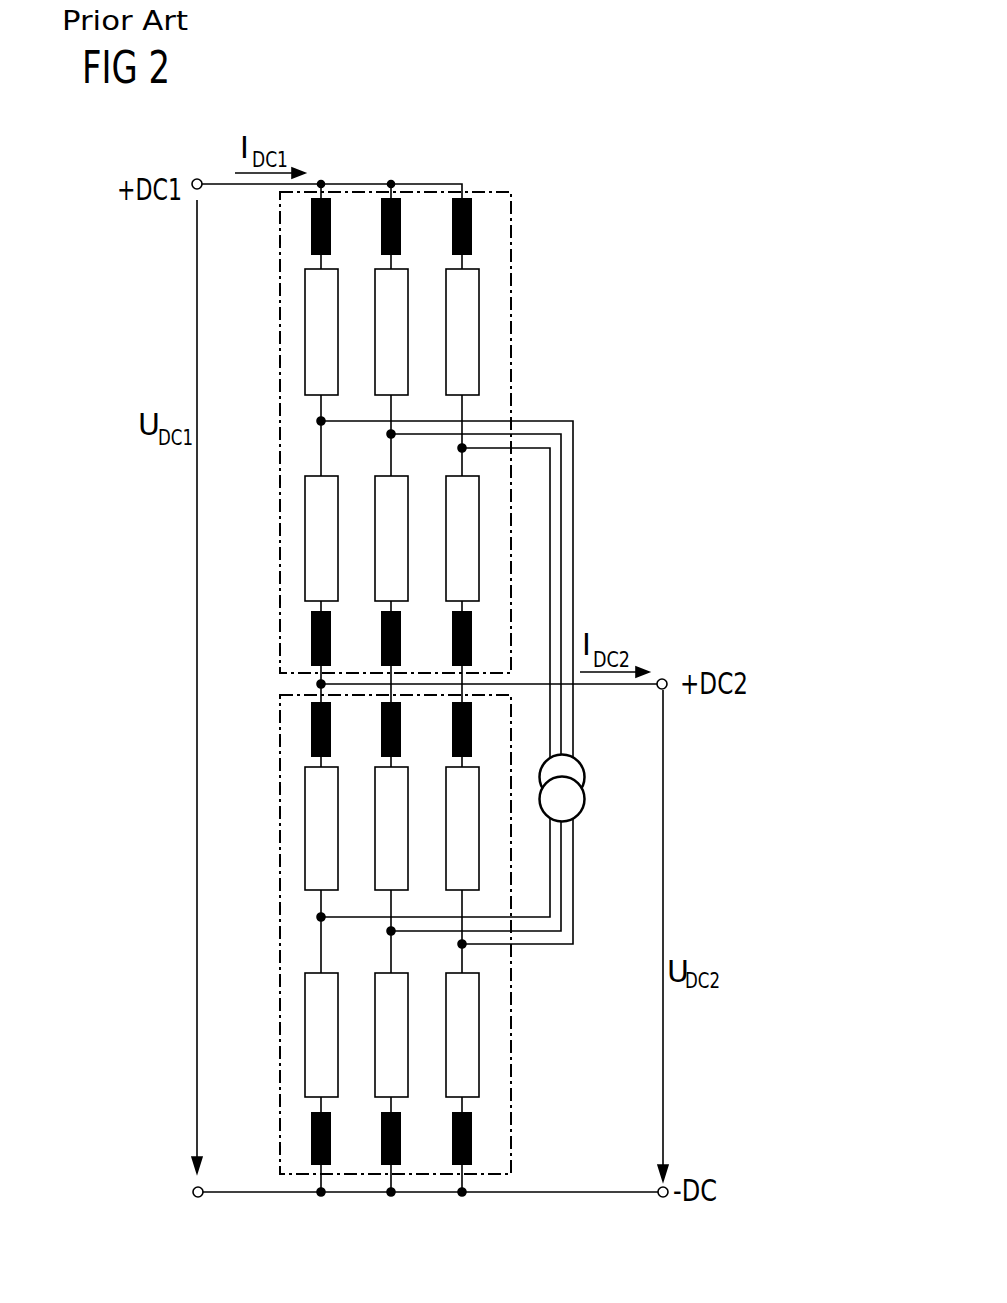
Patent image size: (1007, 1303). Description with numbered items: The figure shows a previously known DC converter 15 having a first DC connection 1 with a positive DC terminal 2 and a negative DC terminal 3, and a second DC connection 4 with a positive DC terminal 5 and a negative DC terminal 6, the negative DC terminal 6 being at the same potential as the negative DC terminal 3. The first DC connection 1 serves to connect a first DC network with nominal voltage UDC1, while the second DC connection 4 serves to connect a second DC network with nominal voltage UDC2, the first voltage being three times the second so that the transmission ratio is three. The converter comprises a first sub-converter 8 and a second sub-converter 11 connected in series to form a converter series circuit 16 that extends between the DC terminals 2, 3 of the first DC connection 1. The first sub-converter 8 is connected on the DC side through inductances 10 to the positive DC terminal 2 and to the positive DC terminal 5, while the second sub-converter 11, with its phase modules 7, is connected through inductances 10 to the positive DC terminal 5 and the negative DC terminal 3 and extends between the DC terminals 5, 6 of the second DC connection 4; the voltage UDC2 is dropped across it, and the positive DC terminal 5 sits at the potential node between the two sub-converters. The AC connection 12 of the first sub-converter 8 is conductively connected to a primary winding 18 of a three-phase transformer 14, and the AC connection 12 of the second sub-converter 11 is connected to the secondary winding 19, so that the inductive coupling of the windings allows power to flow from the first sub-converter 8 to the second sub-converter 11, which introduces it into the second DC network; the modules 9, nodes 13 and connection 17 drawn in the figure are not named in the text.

The first DC connection 1 is at (120, 586).
The positive DC terminal 2 is at (250, 188).
The negative DC terminal 3 is at (240, 1198).
The second DC connection 4 is at (717, 867).
The positive DC terminal 5 is at (661, 674).
The negative DC terminal 6 is at (593, 1188).
The phase modules 7 is at (343, 214).
The first sub-converter 8 is at (511, 303).
The photovoltaic module 9 is at (305, 311).
The inductances 10 is at (472, 239).
The second sub-converter 11 is at (513, 1072).
The AC connection 12 is at (360, 420).
The connection node 13 is at (308, 435).
The three-phase transformer 14 is at (600, 803).
The DC converter 15 is at (675, 357).
The converter series circuit 16 is at (142, 303).
The intermediate connecting line 17 is at (316, 684).
The primary winding 18 is at (584, 773).
The second winding 19 is at (584, 812).